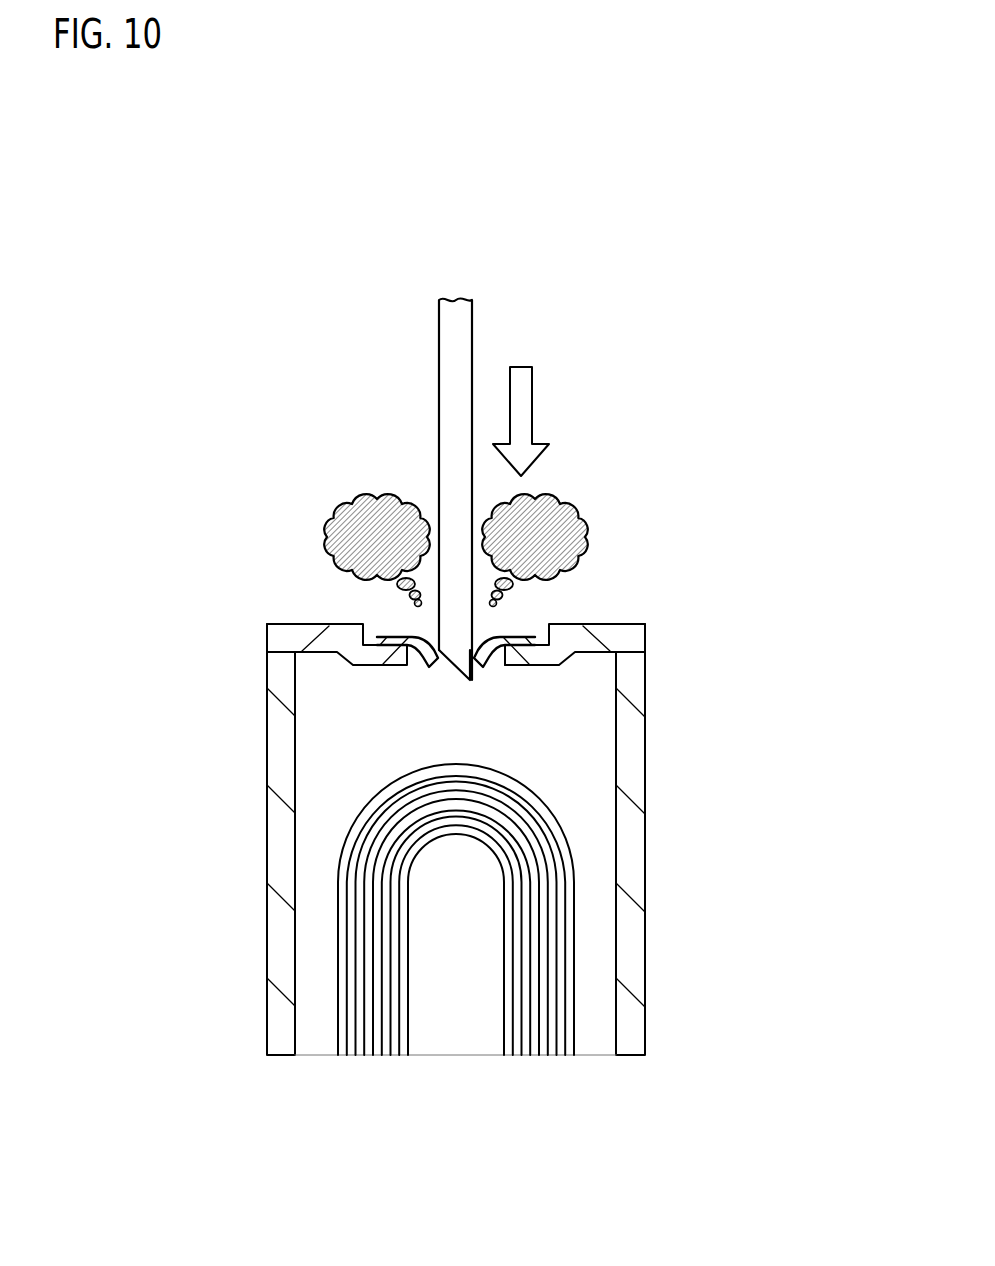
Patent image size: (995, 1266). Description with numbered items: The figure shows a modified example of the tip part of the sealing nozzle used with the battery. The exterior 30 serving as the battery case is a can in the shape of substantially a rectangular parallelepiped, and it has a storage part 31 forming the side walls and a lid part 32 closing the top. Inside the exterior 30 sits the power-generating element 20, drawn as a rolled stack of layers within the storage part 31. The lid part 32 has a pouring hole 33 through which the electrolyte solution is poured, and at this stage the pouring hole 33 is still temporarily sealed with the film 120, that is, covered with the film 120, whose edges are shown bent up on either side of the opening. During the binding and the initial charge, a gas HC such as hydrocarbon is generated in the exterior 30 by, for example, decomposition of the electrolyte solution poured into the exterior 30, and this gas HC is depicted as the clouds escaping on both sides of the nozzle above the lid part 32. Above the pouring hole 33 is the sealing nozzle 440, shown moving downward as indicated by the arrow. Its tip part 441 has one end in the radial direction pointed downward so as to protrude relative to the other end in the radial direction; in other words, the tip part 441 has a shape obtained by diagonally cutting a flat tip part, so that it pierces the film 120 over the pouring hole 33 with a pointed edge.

The power-generating element 20 is at (535, 793).
The exterior 30 is at (435, 818).
The storage part 31 is at (277, 847).
The lid part 32 is at (308, 632).
The pouring hole 33 is at (503, 665).
The film 120 is at (525, 640).
The sealing nozzle 440 is at (447, 432).
The tip part 441 is at (455, 665).
The gas HC is at (330, 522).